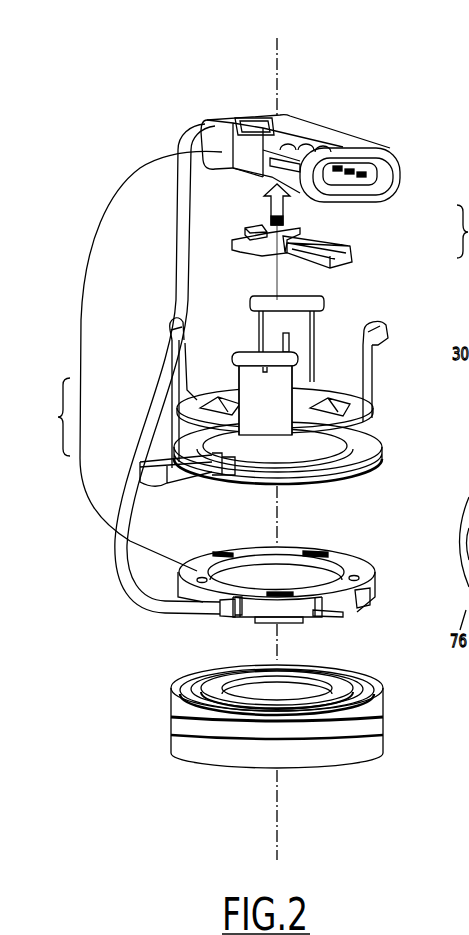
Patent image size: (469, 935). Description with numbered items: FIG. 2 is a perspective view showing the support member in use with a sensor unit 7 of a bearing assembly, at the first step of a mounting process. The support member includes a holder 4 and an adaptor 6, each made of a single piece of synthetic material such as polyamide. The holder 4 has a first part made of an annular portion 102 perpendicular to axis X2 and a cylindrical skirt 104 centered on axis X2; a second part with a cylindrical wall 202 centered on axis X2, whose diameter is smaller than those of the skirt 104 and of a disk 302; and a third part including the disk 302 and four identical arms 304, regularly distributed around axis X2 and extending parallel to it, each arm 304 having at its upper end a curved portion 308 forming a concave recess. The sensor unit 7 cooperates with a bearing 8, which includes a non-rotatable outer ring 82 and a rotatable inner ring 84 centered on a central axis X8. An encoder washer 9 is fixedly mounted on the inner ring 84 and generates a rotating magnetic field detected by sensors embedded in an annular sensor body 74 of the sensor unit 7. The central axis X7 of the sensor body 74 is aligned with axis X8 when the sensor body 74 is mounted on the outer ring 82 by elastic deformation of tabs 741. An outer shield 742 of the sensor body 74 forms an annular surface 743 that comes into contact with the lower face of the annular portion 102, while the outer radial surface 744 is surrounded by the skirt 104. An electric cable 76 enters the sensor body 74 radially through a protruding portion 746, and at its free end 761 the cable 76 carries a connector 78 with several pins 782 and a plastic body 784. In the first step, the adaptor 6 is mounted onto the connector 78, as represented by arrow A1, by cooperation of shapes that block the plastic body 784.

The holder 4 is at (280, 354).
The adaptor 6 is at (363, 253).
The sensor unit 7 is at (60, 417).
The bearing 8 is at (274, 758).
The encoder washer 9 is at (208, 703).
The sensor body 74 is at (247, 545).
The electric cable 76 is at (158, 432).
The connector 78 is at (236, 308).
The outer ring 82 is at (218, 745).
The inner ring 84 is at (205, 688).
The annular portion 102 is at (296, 469).
The cylindrical skirt 104 is at (354, 460).
The cylindrical wall 202 is at (285, 443).
The disk 302 is at (230, 388).
The arm 304 is at (168, 388).
The curved portion 308 is at (172, 317).
The tab 741 is at (265, 623).
The outer shield 742 is at (303, 550).
The annular surface 743 is at (357, 567).
The outer radial surface 744 is at (366, 594).
The portion 746 is at (225, 617).
The free end 761 is at (200, 138).
The pins 782 is at (367, 142).
The plastic body 784 is at (303, 128).
The arrow A1 is at (284, 204).
The axis X2 is at (282, 158).
The central axis of sensor body X7 is at (287, 573).
The central axis of bearing X8 is at (290, 815).